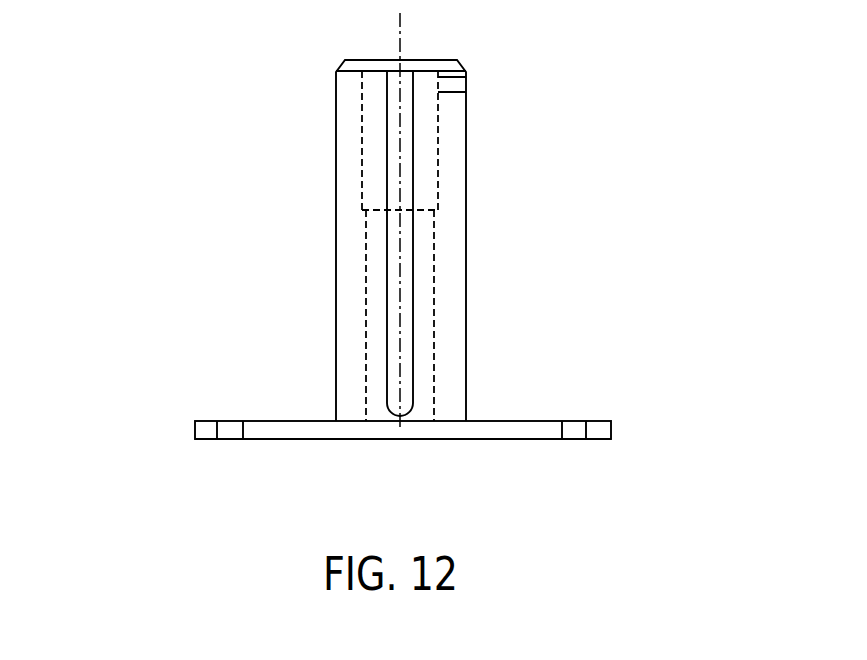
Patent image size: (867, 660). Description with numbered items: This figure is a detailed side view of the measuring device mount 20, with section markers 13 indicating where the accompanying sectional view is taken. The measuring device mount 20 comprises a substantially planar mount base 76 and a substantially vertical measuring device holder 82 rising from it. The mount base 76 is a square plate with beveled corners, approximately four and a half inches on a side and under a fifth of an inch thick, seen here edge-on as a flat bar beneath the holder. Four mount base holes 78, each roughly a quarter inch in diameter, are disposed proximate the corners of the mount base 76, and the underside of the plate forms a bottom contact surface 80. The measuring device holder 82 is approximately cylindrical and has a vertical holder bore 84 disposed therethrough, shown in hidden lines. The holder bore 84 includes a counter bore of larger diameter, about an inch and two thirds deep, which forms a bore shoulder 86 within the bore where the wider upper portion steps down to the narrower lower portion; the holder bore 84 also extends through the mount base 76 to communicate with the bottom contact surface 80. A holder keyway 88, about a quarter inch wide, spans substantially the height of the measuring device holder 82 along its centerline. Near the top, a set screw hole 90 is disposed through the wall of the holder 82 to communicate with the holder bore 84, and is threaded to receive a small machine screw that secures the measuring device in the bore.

The section line 13- 13 is at (103, 41).
The measuring device mount 20 is at (637, 264).
The mount base 76 is at (503, 418).
The mount base holes 78 is at (233, 445).
The bottom contact surface 80 is at (503, 440).
The measuring device holder 82 is at (445, 228).
The holder bore 84 is at (422, 162).
The bore shoulder 86 is at (369, 206).
The holder keyway 88 is at (398, 275).
The set screw hole 90 is at (422, 84).